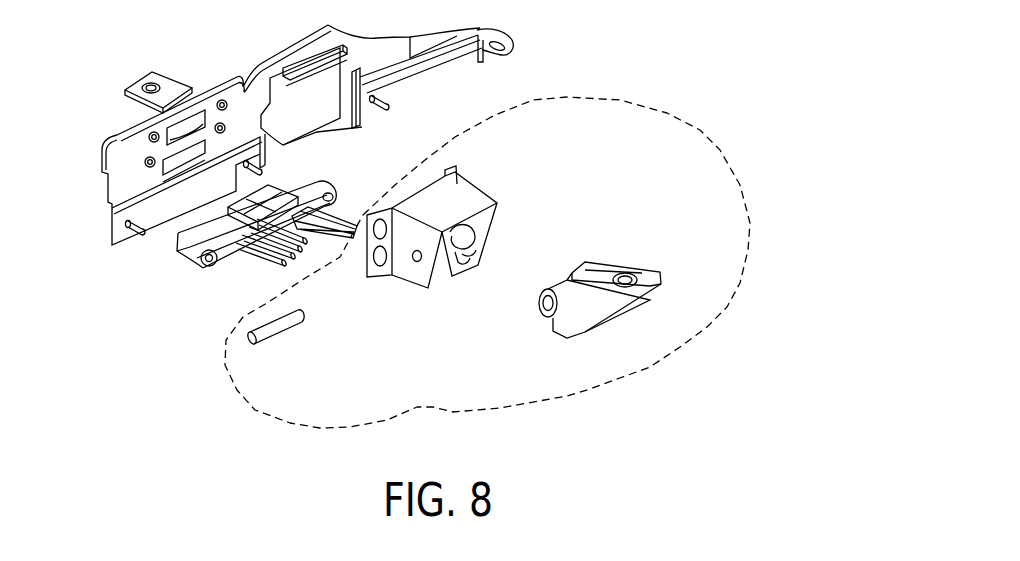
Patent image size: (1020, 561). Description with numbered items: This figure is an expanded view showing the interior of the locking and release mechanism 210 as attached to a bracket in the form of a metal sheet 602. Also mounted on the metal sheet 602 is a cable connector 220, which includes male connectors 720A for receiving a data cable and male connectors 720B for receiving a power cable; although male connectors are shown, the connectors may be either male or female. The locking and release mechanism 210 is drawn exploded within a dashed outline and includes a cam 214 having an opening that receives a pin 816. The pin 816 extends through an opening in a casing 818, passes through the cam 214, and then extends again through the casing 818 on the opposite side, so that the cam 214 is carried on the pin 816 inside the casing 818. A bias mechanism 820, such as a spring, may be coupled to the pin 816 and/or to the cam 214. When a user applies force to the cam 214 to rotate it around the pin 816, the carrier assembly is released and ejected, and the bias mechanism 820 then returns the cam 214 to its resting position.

The metal sheet 602 is at (138, 155).
The cable connector 220 is at (192, 255).
The male connectors 720A is at (268, 258).
The male connectors 720B is at (335, 215).
The casing 818 is at (455, 193).
The bias mechanism 820 is at (477, 226).
The cam 214 is at (617, 263).
The pin 816 is at (273, 328).
The locking and release mechanism 210 is at (713, 147).